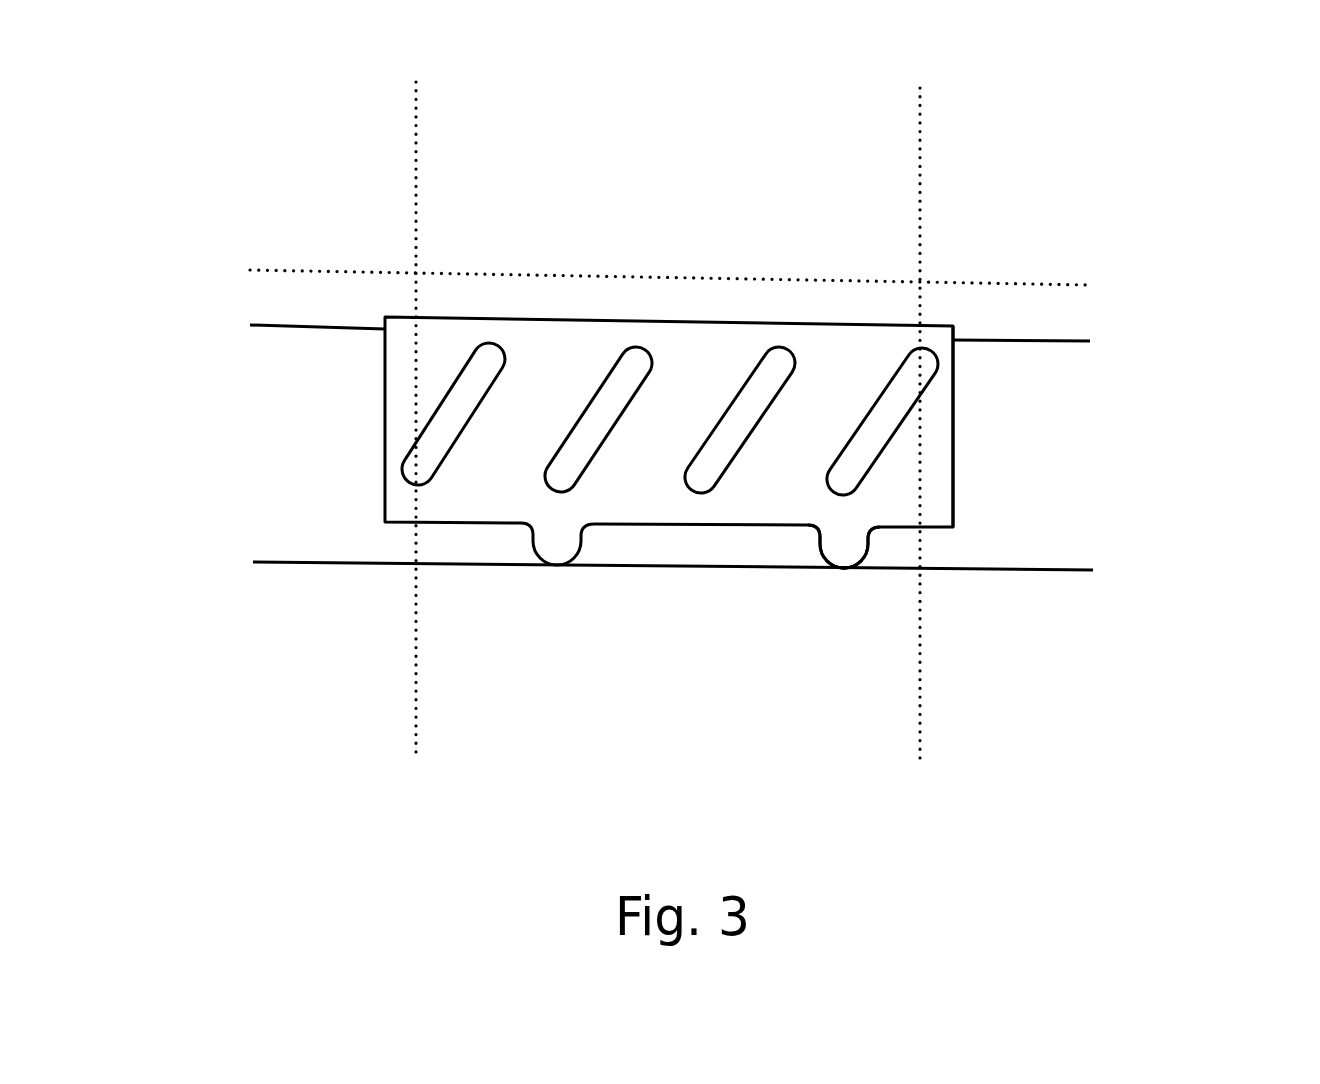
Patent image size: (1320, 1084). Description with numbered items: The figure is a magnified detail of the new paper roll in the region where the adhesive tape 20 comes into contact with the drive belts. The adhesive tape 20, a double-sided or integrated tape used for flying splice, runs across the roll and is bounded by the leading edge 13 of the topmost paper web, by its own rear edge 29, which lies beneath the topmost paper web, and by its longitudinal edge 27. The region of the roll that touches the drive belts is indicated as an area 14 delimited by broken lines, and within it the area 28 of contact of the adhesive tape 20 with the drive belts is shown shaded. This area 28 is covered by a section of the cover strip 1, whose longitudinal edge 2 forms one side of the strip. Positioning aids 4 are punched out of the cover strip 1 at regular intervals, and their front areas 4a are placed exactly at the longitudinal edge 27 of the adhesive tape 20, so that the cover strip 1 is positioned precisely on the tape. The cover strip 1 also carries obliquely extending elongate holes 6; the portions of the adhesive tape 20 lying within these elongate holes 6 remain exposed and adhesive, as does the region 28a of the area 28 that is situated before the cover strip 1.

The cover strip 1 is at (1040, 450).
The longitudinal edge 2 is at (737, 323).
The positioning aids 4 is at (837, 543).
The front areas of the positioning aids 4a is at (843, 570).
The elongate holes 6 is at (612, 400).
The leading edge of the topmost paper web 13 is at (1007, 338).
The area in contact with the drive belts 14 is at (593, 125).
The adhesive tape 20 is at (320, 408).
The longitudinal edge of the adhesive tape 27 is at (325, 563).
The area of contact of the adhesive tape with the drive belts 28 is at (820, 402).
The region of the area situated before the cover strip 28a is at (632, 543).
The rear edge of the adhesive tape 29 is at (312, 268).